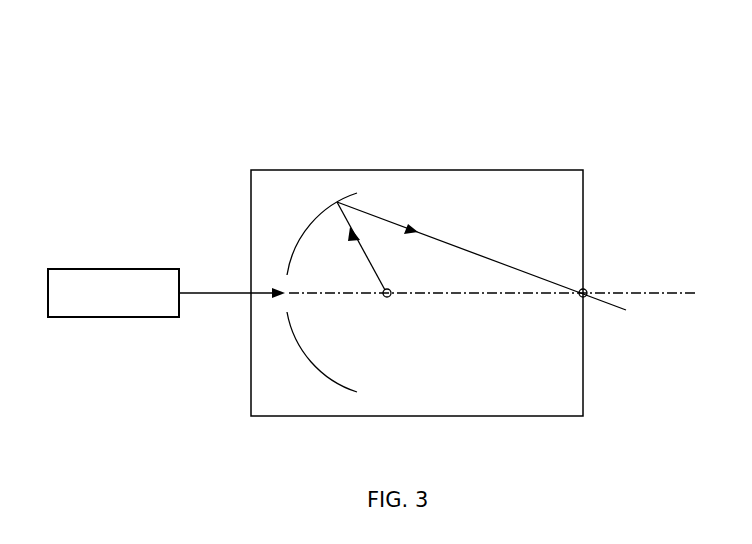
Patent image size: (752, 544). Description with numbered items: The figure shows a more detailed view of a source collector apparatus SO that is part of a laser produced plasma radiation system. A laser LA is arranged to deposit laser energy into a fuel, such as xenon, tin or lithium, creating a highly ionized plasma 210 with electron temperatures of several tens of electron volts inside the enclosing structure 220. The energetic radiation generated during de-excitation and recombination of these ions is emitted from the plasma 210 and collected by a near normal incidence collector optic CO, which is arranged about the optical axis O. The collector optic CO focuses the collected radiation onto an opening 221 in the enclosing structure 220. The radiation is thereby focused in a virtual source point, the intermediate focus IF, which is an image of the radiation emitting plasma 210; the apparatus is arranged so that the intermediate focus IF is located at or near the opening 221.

The source collector apparatus SO is at (414, 104).
The enclosing structure 220 is at (437, 170).
The laser LA is at (68, 317).
The optical axis O is at (697, 293).
The collector optic CO is at (328, 377).
The plasma 210 is at (389, 288).
The opening 221 is at (588, 280).
The intermediate focus IF is at (580, 297).